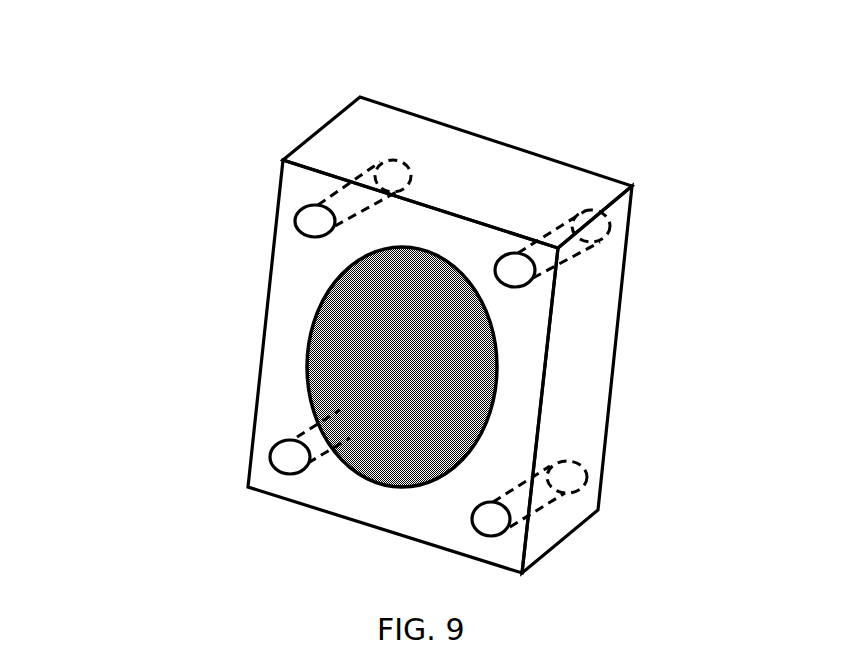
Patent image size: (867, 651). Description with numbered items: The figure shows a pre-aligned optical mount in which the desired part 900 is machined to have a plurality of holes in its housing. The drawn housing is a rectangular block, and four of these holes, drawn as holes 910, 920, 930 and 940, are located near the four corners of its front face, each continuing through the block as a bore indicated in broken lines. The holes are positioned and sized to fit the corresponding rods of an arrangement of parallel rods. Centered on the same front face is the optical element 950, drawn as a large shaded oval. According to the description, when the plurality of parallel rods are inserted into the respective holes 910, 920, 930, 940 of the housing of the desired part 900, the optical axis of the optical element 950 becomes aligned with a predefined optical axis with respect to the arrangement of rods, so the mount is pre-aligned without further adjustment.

The desired part 900 is at (619, 142).
The first mounting hole 910 is at (296, 220).
The second mounting hole 920 is at (270, 453).
The third mounting hole 930 is at (471, 518).
The fourth mounting hole 940 is at (535, 282).
The optical element 950 is at (424, 389).